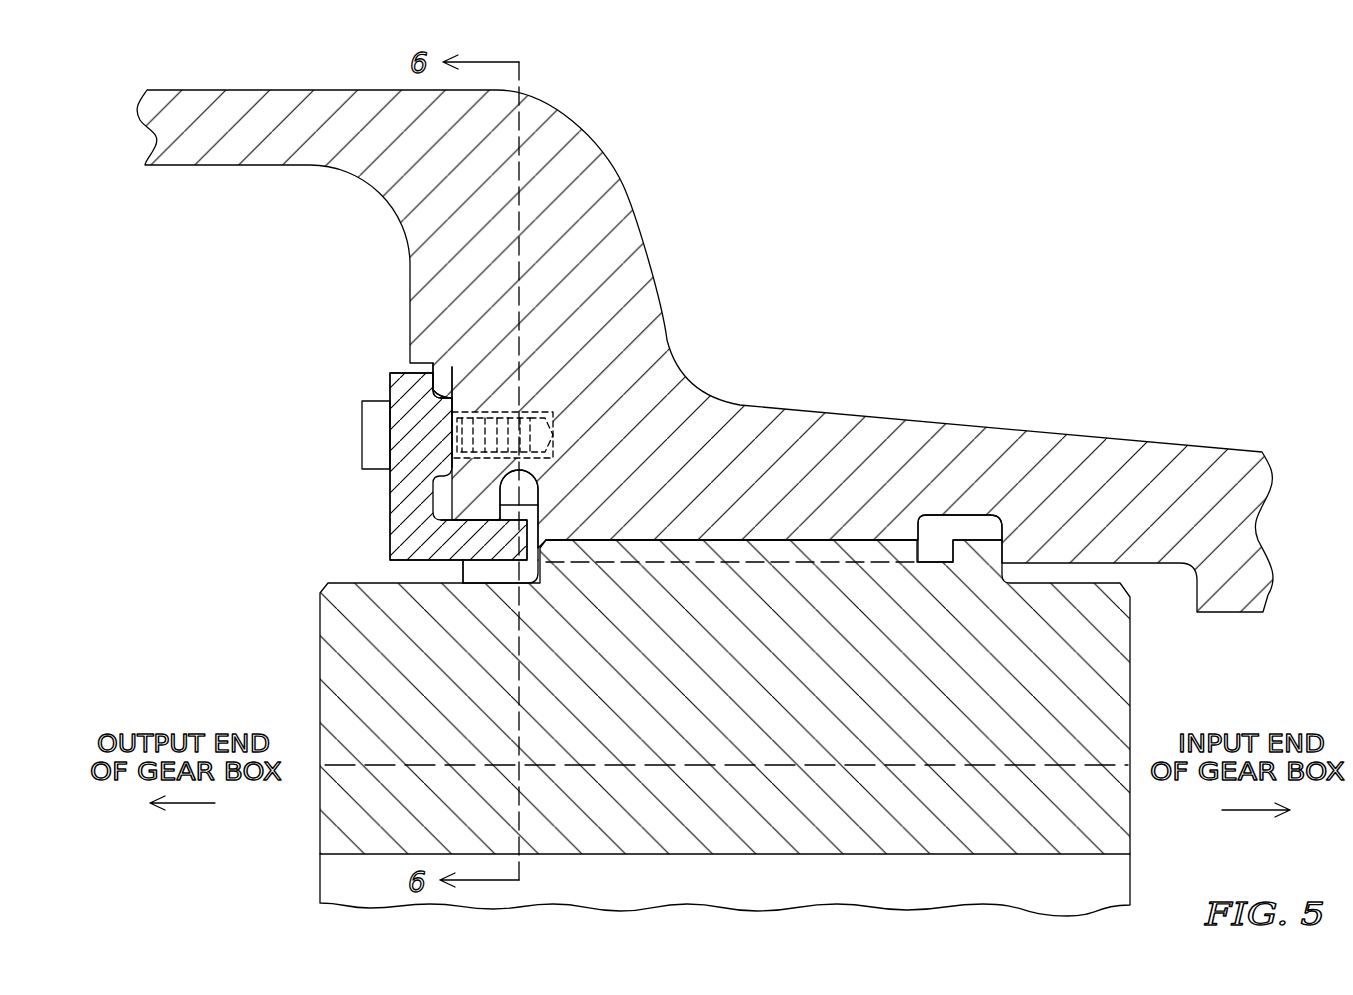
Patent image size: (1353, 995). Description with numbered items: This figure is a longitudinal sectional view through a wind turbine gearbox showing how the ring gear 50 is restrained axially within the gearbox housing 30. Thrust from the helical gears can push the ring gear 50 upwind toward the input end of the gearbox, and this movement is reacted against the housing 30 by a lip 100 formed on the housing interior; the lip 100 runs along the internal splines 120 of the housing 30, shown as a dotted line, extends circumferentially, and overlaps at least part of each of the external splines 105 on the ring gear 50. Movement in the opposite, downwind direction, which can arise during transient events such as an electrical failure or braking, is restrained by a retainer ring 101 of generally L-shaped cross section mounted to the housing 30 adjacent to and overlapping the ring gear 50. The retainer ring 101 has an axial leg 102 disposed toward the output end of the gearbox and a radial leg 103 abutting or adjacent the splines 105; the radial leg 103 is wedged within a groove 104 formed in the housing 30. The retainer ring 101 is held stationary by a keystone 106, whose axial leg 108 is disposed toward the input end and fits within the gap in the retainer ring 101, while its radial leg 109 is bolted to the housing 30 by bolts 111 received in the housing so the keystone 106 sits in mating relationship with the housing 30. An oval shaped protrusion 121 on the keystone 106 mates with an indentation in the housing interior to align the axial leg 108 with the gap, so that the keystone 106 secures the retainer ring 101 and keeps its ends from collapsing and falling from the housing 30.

The gearbox housing 30 is at (1115, 450).
The ring gear 50 is at (1149, 674).
The lip 100 is at (985, 534).
The retainer ring 101 is at (443, 575).
The axial leg 102 is at (502, 572).
The radial leg 103 is at (518, 513).
The groove 104 is at (517, 488).
The external splines 105 is at (733, 555).
The keystone 106 is at (366, 487).
The axial leg 108 is at (468, 542).
The radial leg 109 is at (403, 373).
The bolts 111 is at (361, 442).
The internal splines 120 is at (832, 563).
The oval shaped protrusion 121 is at (453, 393).